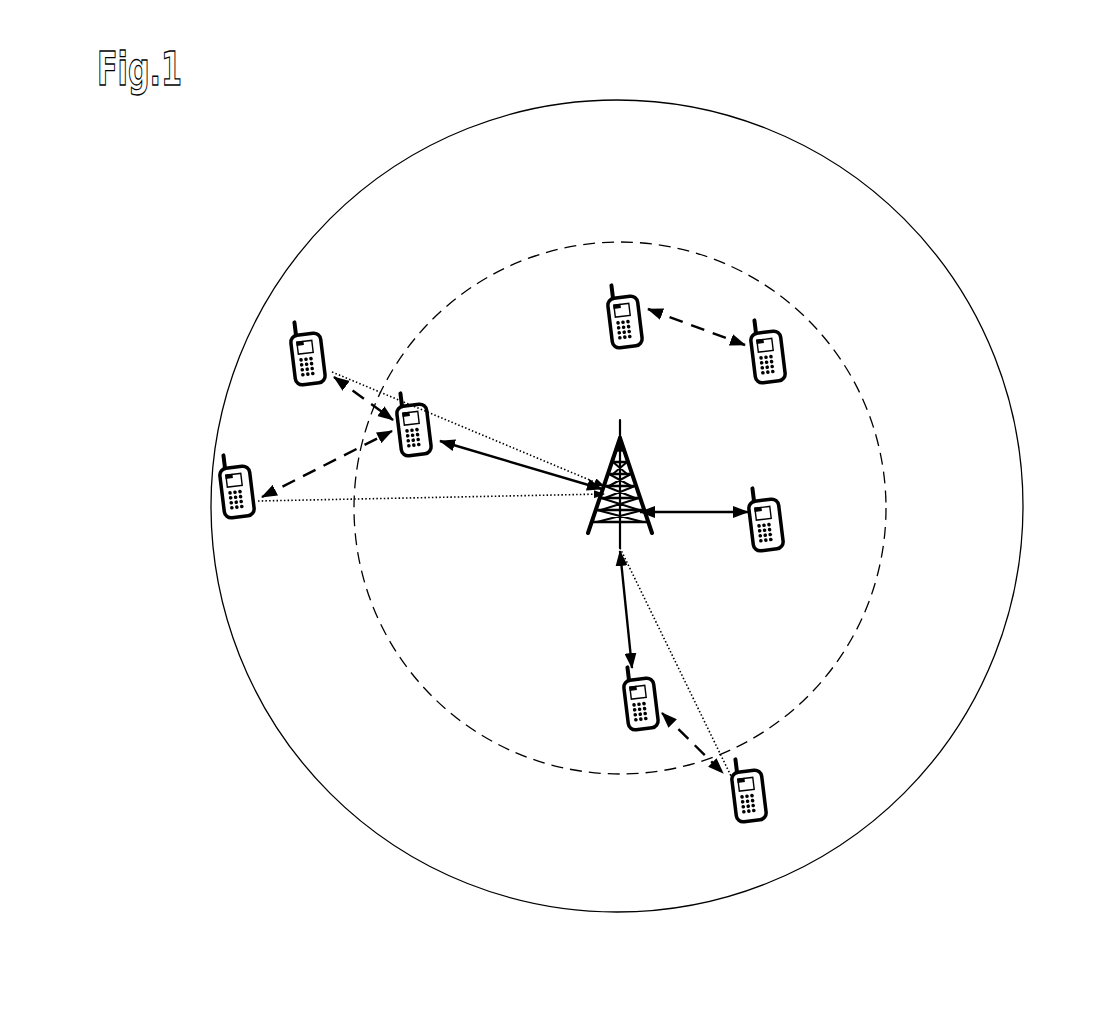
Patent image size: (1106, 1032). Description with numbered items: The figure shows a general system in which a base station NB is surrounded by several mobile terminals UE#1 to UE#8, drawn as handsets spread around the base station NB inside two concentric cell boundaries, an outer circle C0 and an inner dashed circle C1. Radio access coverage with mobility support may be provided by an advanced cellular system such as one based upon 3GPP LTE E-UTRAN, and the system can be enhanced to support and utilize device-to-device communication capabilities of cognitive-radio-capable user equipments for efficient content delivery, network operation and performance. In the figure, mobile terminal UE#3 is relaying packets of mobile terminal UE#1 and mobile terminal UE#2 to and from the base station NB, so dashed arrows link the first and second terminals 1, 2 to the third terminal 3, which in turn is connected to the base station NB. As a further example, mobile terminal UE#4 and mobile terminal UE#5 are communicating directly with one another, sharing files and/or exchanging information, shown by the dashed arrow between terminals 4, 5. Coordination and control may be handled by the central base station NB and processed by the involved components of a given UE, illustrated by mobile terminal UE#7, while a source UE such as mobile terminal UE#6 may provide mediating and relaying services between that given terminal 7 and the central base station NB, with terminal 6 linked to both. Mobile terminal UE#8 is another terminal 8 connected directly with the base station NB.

The mobile terminal UE# 1 is at (306, 368).
The mobile terminal UE# 2 is at (235, 503).
The mobile terminal UE# 3 is at (412, 441).
The mobile terminal UE# 4 is at (623, 333).
The mobile terminal UE# 5 is at (766, 368).
The mobile terminal UE# 6 is at (639, 715).
The mobile terminal UE# 7 is at (747, 807).
The mobile terminal UE# 8 is at (764, 537).
The base station NB is at (632, 484).
The outer cell coverage circle C0 is at (634, 506).
The inner cell coverage circle C1 is at (637, 508).